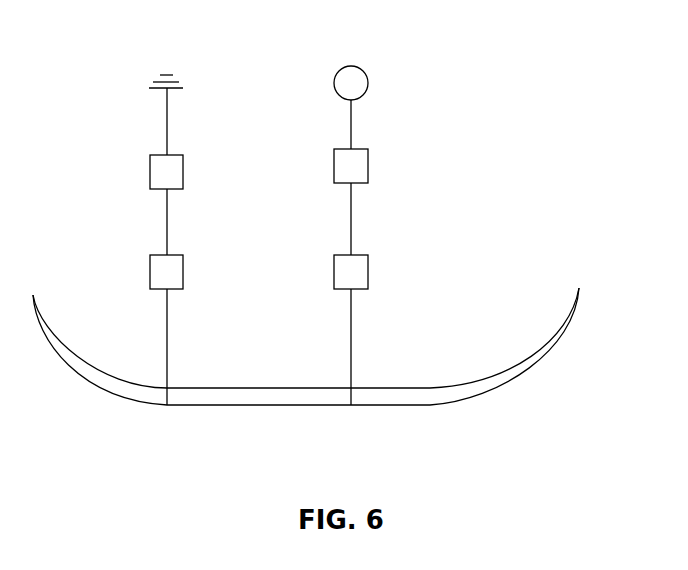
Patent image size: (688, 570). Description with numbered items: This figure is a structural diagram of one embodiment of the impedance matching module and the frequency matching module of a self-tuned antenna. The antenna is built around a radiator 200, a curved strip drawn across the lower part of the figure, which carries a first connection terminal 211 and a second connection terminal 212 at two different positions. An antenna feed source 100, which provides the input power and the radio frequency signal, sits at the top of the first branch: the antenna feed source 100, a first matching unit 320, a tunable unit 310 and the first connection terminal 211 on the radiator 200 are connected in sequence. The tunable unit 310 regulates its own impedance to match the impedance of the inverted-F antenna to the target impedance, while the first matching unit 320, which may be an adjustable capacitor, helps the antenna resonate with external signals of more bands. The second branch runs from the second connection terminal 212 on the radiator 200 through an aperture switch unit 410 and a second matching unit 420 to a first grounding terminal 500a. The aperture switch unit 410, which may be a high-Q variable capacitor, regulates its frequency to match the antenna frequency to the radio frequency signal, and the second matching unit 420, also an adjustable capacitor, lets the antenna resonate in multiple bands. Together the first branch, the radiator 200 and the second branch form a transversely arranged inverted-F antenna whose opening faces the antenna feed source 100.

The antenna feed source 100 is at (342, 68).
The radiator 200 is at (508, 391).
The first connection terminal 211 is at (351, 387).
The second connection terminal 212 is at (165, 387).
The tunable unit 310 is at (351, 255).
The first matching unit 320 is at (351, 149).
The aperture switch unit 410 is at (167, 255).
The second matching unit 420 is at (167, 155).
The first grounding terminal 500a is at (163, 72).